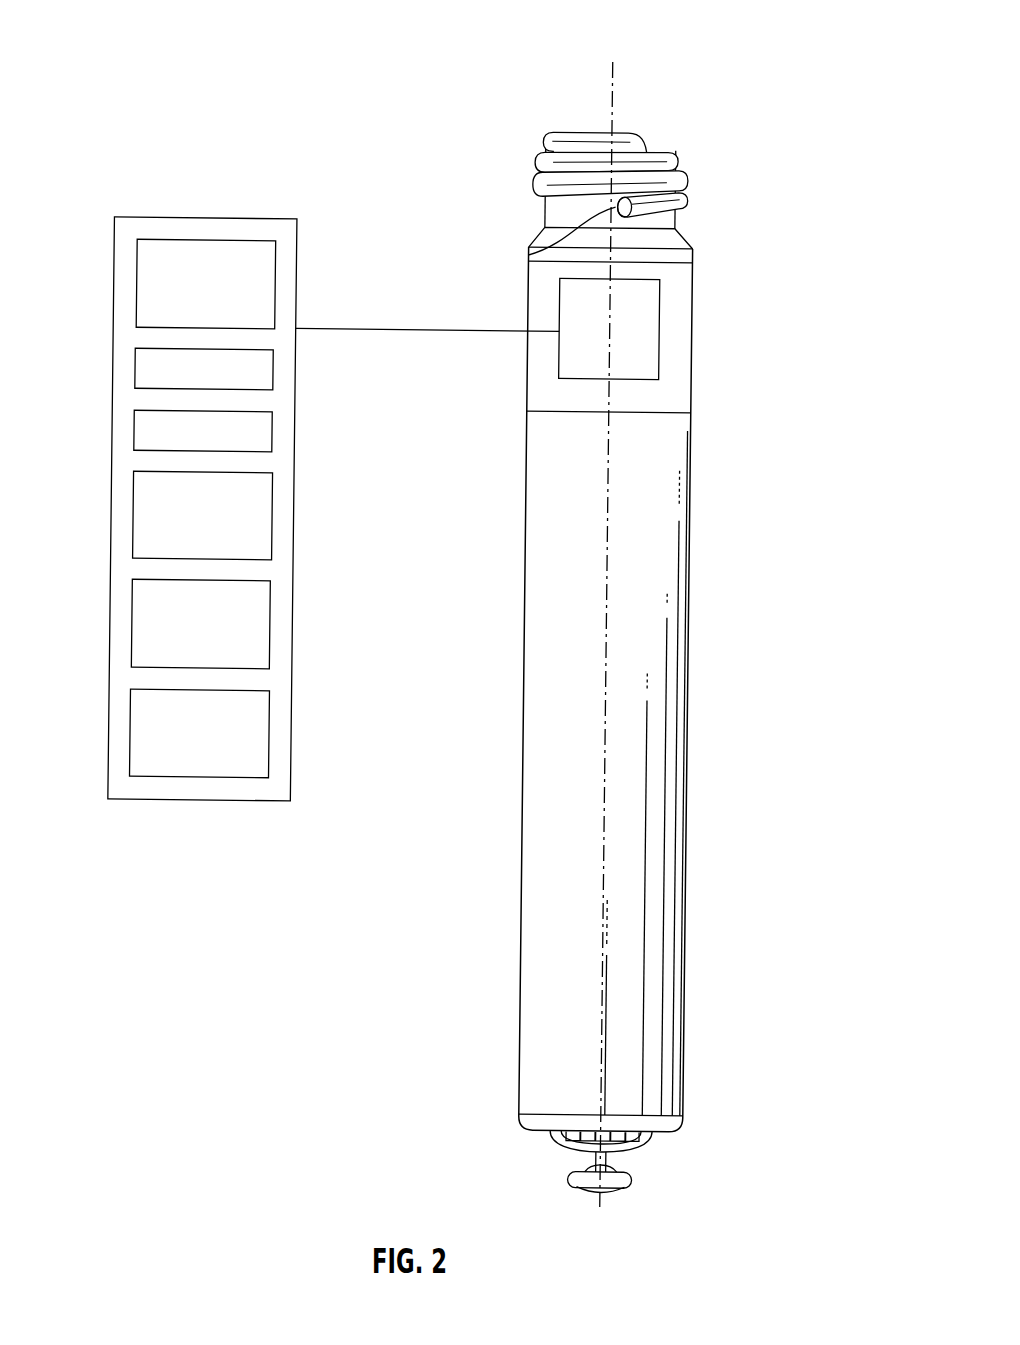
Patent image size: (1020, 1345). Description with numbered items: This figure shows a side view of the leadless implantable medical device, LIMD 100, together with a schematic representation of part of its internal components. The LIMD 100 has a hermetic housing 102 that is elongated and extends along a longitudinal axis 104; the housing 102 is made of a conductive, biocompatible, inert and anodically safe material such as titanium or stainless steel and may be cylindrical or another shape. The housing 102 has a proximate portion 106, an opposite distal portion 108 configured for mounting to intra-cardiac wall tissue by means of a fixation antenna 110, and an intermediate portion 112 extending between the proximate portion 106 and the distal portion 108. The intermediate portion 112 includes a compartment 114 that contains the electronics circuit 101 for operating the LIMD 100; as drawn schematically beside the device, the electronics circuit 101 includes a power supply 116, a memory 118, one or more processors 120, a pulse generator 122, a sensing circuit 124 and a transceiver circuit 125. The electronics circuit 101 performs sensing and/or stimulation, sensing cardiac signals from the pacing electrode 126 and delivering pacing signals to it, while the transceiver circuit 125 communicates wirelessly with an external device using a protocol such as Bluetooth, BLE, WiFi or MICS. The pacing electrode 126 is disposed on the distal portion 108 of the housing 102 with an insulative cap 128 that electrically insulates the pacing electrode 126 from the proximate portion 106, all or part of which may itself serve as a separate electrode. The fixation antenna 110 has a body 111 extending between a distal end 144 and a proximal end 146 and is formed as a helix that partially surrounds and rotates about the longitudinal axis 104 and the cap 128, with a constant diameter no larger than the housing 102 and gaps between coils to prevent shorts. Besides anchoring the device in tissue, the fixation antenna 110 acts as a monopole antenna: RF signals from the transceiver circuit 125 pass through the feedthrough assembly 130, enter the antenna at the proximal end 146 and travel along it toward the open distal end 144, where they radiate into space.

The LIMD 100 is at (735, 43).
The electronics circuit 101 is at (158, 194).
The housing 102 is at (710, 472).
The longitudinal axis 104 is at (610, 967).
The proximate portion 106 is at (721, 996).
The distal portion 108 is at (660, 142).
The fixation antenna 110 is at (599, 111).
The body 111 is at (672, 158).
The intermediate portion 112 is at (546, 316).
The compartment 114 is at (669, 345).
The power supply 116 is at (132, 290).
The memory 118 is at (131, 379).
The processors 120 is at (131, 437).
The pulse generator 122 is at (131, 521).
The sensing circuit 124 is at (131, 626).
The transceiver circuit 125 is at (130, 735).
The pacing electrode 126 is at (590, 114).
The insulative cap 128 is at (538, 221).
The feedthrough assembly 130 is at (667, 241).
The distal end 144 is at (632, 142).
The proximal end 146 is at (523, 256).